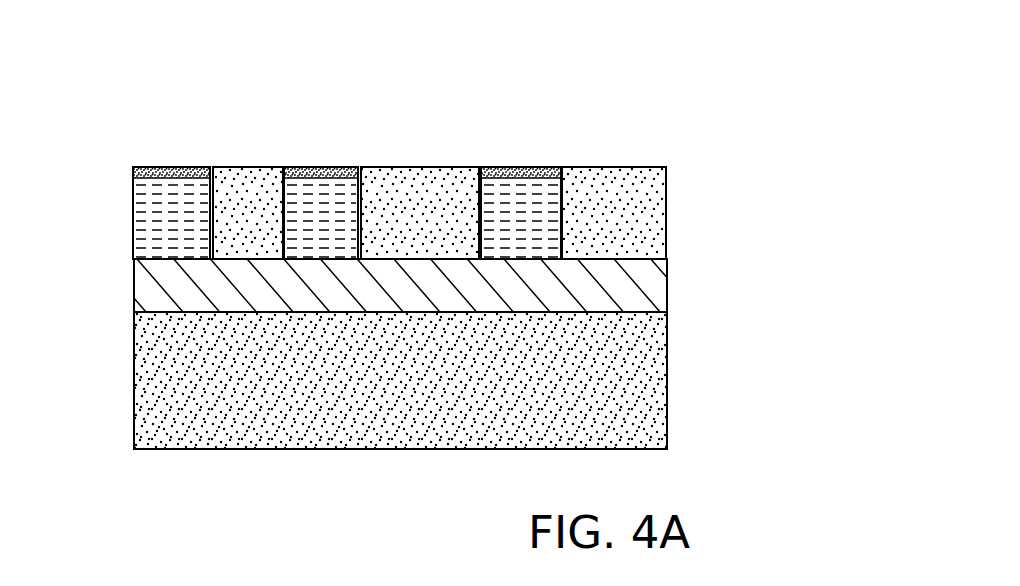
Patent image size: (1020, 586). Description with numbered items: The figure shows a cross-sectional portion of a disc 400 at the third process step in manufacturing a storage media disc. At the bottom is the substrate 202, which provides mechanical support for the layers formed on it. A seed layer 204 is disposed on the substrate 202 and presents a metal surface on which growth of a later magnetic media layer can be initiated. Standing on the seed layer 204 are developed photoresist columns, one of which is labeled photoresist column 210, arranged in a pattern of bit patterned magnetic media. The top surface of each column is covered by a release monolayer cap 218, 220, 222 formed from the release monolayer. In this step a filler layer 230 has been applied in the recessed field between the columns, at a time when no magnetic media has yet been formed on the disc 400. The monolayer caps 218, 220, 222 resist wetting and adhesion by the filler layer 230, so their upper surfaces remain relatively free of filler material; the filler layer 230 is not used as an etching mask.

The disc 400 is at (556, 73).
The substrate 202 is at (667, 365).
The seed layer 204 is at (667, 273).
The photoresist column 210 is at (118, 184).
The release monolayer cap 218 is at (163, 168).
The release monolayer cap 220 is at (317, 167).
The release monolayer cap 222 is at (525, 167).
The filler layer 230 is at (250, 167).